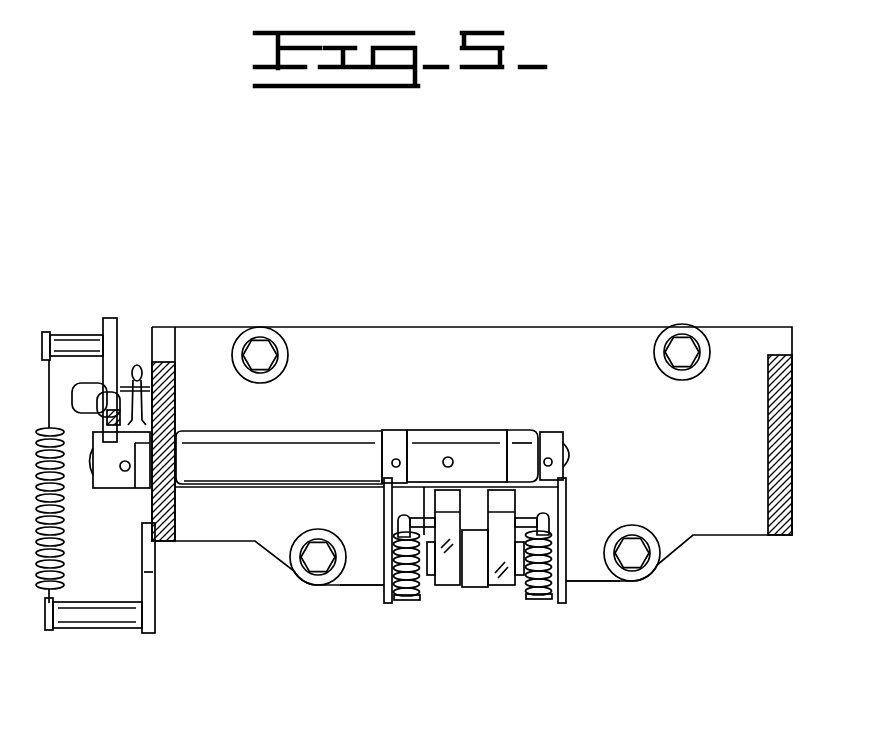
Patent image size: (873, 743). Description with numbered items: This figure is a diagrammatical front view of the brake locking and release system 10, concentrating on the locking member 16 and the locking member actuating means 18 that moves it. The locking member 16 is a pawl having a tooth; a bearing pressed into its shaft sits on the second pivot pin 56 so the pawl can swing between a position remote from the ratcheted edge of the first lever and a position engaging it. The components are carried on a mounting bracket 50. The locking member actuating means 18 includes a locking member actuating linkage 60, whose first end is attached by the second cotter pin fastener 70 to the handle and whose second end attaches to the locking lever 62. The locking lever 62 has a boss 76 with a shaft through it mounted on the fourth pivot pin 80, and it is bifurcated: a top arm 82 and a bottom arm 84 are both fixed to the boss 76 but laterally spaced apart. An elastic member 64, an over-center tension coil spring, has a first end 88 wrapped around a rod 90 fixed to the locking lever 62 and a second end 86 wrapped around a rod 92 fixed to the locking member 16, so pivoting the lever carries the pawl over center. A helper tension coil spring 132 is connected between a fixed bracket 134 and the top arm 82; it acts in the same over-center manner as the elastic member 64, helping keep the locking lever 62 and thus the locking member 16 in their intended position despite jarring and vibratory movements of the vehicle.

The brake locking and release system 10 is at (334, 208).
The locking member 16 is at (498, 588).
The locking member actuating means 18 is at (341, 424).
The mounting bracket 50 is at (566, 336).
The second pivot pin 56 is at (524, 584).
The locking member actuating linkage 60 is at (135, 364).
The locking lever 62 is at (385, 604).
The elastic member 64 is at (422, 598).
The second cotter pin fastener 70 is at (177, 388).
The boss 76 is at (443, 434).
The fourth pivot pin 80 is at (573, 447).
The top arm 82 is at (110, 318).
The bottom arm 84 is at (385, 567).
The second end 86 is at (408, 604).
The first end 88 is at (400, 530).
The rod 90 is at (400, 599).
The rod 92 is at (424, 513).
The helper tension coil spring 132 is at (63, 520).
The fixed bracket 134 is at (155, 637).